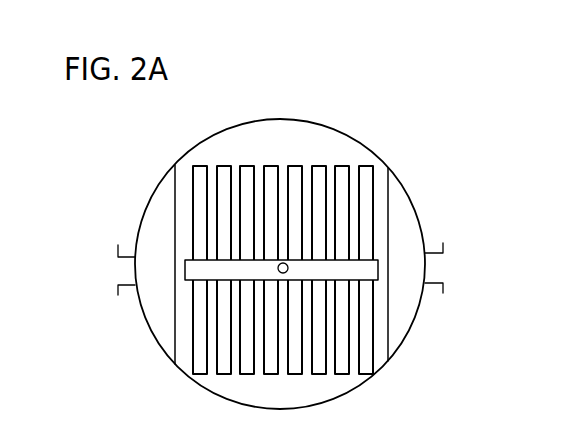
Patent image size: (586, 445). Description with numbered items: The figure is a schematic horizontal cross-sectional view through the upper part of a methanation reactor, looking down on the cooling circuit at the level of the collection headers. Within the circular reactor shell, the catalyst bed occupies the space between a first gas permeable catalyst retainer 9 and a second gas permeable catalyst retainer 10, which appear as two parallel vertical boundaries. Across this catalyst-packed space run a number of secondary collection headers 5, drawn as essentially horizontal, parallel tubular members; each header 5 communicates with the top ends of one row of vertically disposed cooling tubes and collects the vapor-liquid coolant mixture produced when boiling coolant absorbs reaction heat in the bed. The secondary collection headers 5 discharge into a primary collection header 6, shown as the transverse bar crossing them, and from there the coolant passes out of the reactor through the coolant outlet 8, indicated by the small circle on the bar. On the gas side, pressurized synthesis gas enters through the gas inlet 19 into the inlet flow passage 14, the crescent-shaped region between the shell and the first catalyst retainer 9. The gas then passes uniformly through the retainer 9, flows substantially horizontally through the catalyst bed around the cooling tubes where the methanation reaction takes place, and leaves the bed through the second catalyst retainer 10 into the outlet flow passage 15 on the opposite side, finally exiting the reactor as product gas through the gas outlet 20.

The secondary collection headers 5 is at (222, 172).
The primary collection header 6 is at (376, 283).
The coolant outlet 8 is at (288, 264).
The first gas permeable catalyst retainer 9 is at (173, 335).
The second gas permeable catalyst retainer 10 is at (388, 345).
The inlet flow passage 14 is at (152, 285).
The outlet flow passage 15 is at (405, 300).
The gas inlet 19 is at (132, 252).
The gas outlet 20 is at (438, 272).